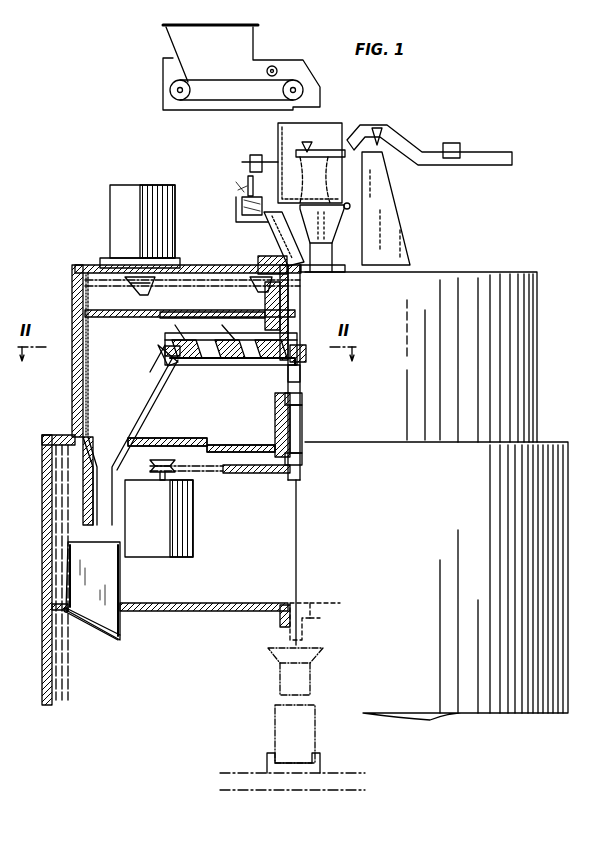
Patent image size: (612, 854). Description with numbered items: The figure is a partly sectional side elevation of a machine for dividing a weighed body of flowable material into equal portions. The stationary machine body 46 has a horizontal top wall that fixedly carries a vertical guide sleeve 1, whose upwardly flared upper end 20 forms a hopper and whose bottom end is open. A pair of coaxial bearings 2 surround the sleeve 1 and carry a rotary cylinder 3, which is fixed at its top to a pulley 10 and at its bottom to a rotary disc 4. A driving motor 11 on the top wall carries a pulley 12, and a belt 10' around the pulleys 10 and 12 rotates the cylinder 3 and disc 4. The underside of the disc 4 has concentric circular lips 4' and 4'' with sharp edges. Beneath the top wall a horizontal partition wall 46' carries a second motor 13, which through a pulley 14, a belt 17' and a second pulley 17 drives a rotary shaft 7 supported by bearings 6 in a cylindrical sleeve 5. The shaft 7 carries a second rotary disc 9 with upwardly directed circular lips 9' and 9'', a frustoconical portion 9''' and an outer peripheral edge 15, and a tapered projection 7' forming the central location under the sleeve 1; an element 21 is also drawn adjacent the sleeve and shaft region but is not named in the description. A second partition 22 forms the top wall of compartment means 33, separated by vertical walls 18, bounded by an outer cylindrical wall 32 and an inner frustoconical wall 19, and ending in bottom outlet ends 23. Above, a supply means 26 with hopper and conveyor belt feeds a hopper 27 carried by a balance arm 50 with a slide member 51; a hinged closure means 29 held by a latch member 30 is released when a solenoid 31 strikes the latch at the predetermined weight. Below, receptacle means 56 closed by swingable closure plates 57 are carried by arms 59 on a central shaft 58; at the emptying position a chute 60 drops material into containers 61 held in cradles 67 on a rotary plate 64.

The vertical guide sleeve 1 is at (300, 314).
The coaxial bearings 2 is at (290, 300).
The rotary cylinder 3 is at (265, 300).
The rotary disc 4 is at (212, 309).
The circular lip 4' is at (217, 314).
The circular lip 4'' is at (171, 314).
The cylindrical sleeve 5 is at (275, 415).
The bearings 6 is at (302, 398).
The rotary shaft 7 is at (311, 429).
The projection 7' is at (310, 375).
The second rotary disc 9 is at (231, 364).
The circular lip 9' is at (268, 377).
The circular lip 9'' is at (209, 377).
The frustoconical portion 9''' is at (179, 377).
The pulley 10 is at (192, 266).
The belt 10' is at (198, 270).
The driving motor 11 is at (110, 212).
The pulley 12 is at (105, 260).
The second motor 13 is at (193, 545).
The pulley 14 is at (163, 458).
The outer peripheral edge 15 is at (165, 350).
The second pulley 17 is at (256, 482).
The belt 17' is at (186, 483).
The vertical walls 18 is at (160, 366).
The inner wall 19 is at (142, 395).
The upper end of sleeve 20 is at (276, 236).
The bracket 21 is at (306, 352).
The second partition 22 is at (118, 317).
The bottom outlet ends 23 is at (88, 496).
The supply means 26 is at (172, 43).
The hopper 27 is at (279, 128).
The hinged closure means 29 is at (320, 243).
The latch member 30 is at (252, 180).
The solenoid 31 is at (242, 205).
The outer cylindrical wall 32 is at (88, 372).
The compartment means 33 is at (118, 418).
The stationary machine body 46 is at (169, 351).
The horizontal partition wall 46' is at (201, 434).
The balance arm 50 is at (428, 163).
The slide member 51 is at (458, 145).
The receptacle means 56 is at (120, 580).
The swingable closure plates 57 is at (94, 624).
The central shaft 58 is at (292, 604).
The arms 59 is at (190, 612).
The chute 60 is at (280, 682).
The containers 61 is at (275, 718).
The rotary plate 64 is at (241, 786).
The cradles 67 is at (267, 760).